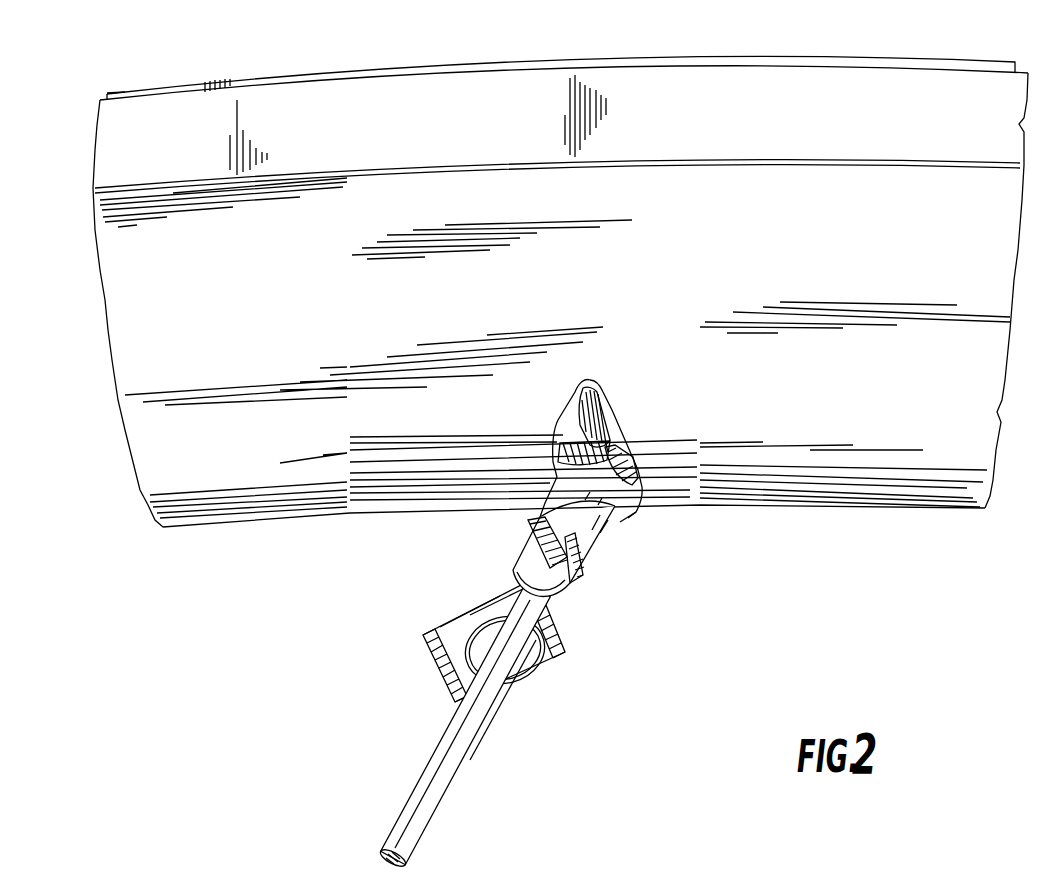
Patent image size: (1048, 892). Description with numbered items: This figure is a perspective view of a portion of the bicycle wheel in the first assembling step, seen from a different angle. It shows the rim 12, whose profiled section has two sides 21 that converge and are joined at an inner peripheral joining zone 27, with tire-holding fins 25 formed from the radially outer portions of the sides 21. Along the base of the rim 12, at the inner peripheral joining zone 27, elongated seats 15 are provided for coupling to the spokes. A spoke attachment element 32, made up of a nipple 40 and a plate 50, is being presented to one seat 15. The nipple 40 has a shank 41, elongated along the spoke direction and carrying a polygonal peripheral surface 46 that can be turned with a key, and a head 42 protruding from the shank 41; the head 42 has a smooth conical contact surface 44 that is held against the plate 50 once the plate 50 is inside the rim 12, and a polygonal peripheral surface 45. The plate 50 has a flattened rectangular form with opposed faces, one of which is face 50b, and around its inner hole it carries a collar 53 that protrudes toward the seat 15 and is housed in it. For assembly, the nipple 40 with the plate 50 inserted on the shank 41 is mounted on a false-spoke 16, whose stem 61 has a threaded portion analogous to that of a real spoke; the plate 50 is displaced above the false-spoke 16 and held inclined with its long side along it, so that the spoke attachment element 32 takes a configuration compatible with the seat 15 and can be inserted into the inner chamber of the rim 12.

The rim 12 is at (322, 68).
The tire-holding fin 25 is at (123, 95).
The side 21 is at (125, 338).
The inner peripheral joining zone 27 is at (262, 520).
The seat 15 is at (572, 413).
The head 42 is at (607, 430).
The polygonal peripheral surface 45 is at (630, 467).
The shank 41 is at (557, 510).
The polygonal peripheral surface 46 is at (537, 547).
The smooth conical contact surface 44 is at (623, 523).
The nipple 40 is at (608, 547).
The spoke attachment element 32 is at (612, 629).
The plate 50 is at (428, 665).
The face 50b is at (565, 640).
The collar 53 is at (537, 663).
The stem 61 is at (432, 777).
The false-spoke 16 is at (472, 754).